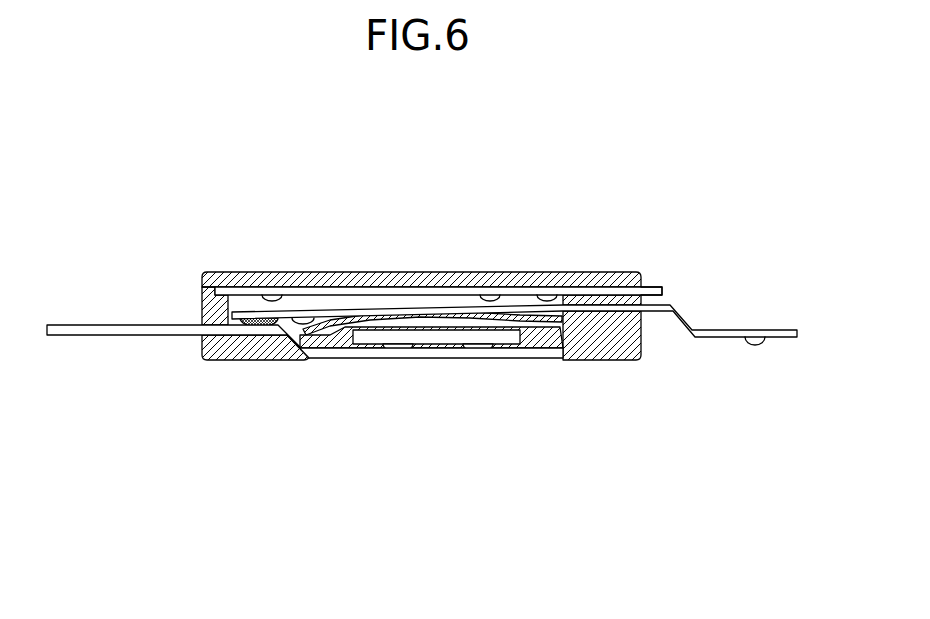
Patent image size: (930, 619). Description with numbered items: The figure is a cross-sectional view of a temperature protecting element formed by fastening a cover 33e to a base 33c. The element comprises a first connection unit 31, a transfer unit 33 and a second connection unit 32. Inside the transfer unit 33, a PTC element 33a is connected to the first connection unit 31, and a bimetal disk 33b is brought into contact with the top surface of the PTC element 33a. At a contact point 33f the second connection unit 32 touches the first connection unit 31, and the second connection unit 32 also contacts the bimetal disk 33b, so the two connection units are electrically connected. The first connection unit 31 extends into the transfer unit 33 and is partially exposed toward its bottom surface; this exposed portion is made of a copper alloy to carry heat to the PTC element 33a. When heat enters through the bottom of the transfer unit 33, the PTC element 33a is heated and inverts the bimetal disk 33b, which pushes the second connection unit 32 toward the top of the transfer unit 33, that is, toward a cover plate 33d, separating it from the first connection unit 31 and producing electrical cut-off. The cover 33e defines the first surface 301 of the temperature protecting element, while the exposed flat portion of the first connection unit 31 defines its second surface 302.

The first connection unit 31 is at (100, 336).
The second connection unit 32 is at (773, 339).
The transfer unit 33 is at (447, 318).
The first surface 301 is at (325, 262).
The second surface 302 is at (325, 367).
The PTC element 33a is at (370, 338).
The bimetal disk 33b is at (433, 321).
The base 33c is at (598, 350).
The cover plate 33d is at (653, 286).
The cover 33e is at (549, 270).
The contact point 33f is at (258, 317).